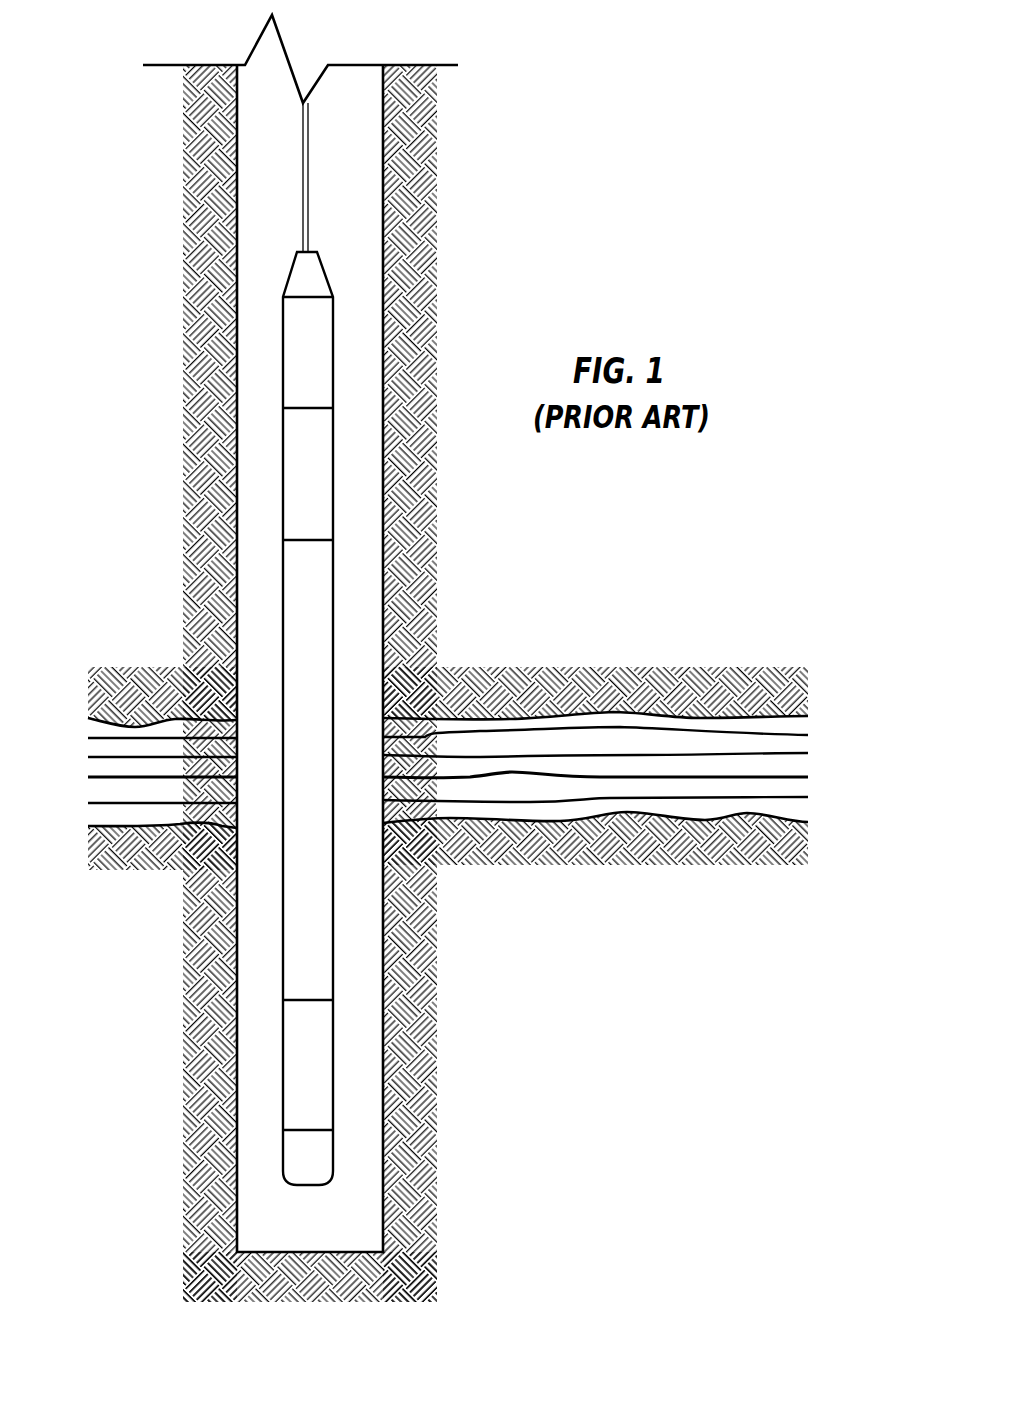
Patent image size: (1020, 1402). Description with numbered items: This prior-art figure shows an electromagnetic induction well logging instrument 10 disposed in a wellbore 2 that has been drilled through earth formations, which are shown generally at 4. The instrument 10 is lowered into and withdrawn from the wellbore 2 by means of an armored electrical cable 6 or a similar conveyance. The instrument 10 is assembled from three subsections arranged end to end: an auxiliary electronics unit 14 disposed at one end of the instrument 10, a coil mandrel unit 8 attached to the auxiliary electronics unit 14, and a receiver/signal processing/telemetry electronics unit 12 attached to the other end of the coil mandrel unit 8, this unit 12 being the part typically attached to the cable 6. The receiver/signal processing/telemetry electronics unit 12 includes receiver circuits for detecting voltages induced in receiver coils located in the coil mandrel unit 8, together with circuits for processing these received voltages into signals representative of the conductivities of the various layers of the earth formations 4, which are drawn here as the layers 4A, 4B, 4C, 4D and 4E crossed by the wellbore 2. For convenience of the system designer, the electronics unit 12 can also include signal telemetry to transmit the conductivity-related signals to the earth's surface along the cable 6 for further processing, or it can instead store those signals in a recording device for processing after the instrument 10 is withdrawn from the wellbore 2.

The wellbore 2 is at (337, 205).
The earth formations 4 is at (479, 768).
The layer of the earth formations 4A is at (795, 725).
The layer of the earth formations 4B is at (795, 747).
The layer of the earth formations 4C is at (795, 770).
The layer of the earth formations 4D is at (795, 788).
The layer of the earth formations 4E is at (795, 812).
The armored electrical cable 6 is at (303, 187).
The coil mandrel unit 8 is at (318, 760).
The electromagnetic induction well logging instrument 10 is at (376, 644).
The receiver/signal processing/telemetry electronics unit 12 is at (324, 480).
The auxiliary electronics unit 14 is at (326, 1093).